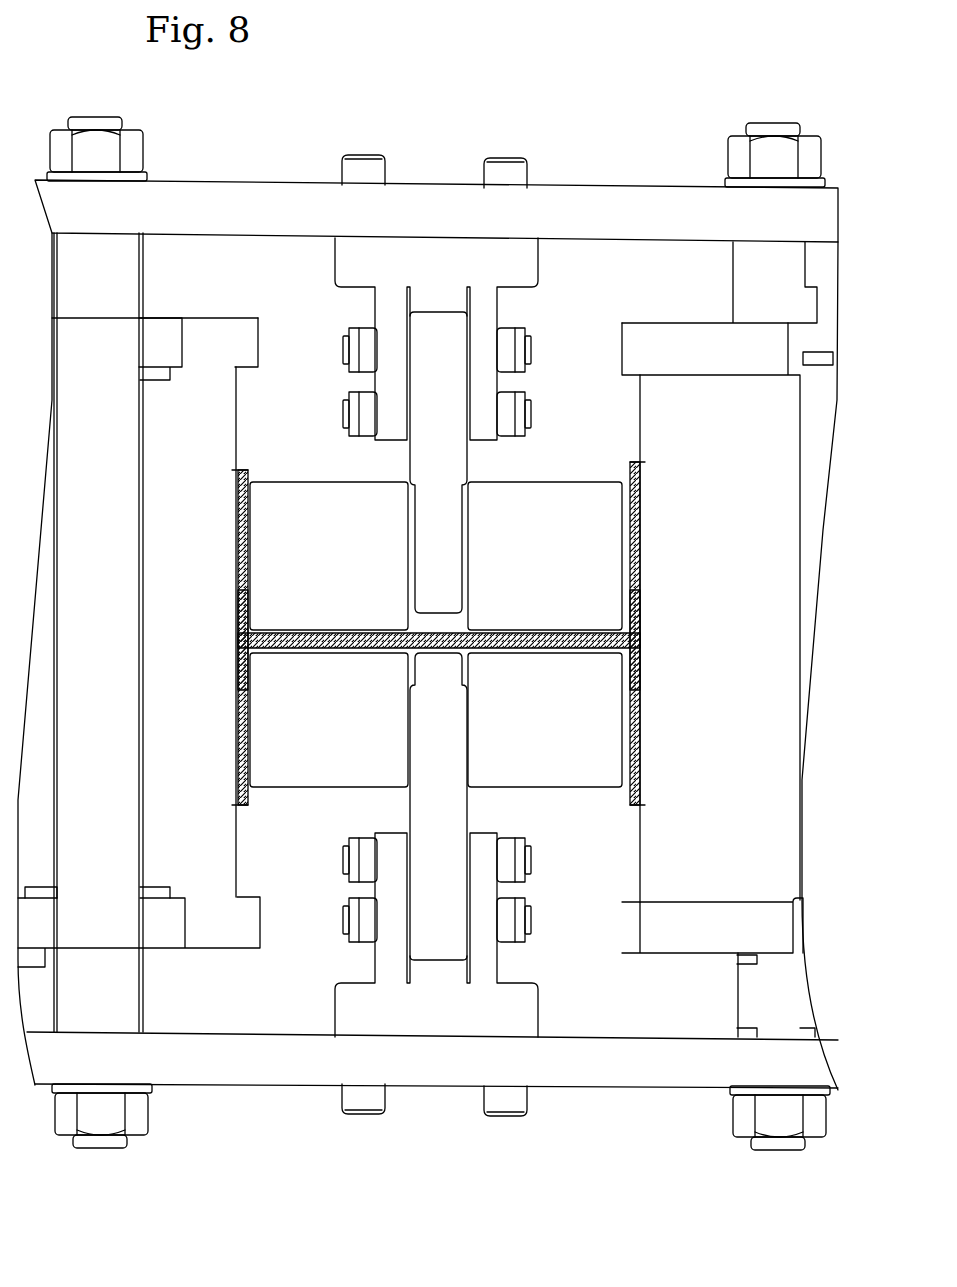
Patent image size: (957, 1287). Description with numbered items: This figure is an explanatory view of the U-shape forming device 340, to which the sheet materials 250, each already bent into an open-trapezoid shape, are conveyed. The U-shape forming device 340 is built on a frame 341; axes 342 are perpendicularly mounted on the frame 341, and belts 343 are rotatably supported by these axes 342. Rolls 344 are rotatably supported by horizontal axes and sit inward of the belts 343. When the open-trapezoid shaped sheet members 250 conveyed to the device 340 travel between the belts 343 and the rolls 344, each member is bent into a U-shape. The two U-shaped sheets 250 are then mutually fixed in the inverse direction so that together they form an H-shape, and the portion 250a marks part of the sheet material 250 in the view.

The U-shape forming device 340 is at (627, 152).
The frame 341 is at (622, 1082).
The axes 342 is at (105, 850).
The belts 343 is at (236, 370).
The rolls 344 is at (362, 576).
The sheet materials 250 is at (245, 480).
The plate portion 250a is at (243, 602).